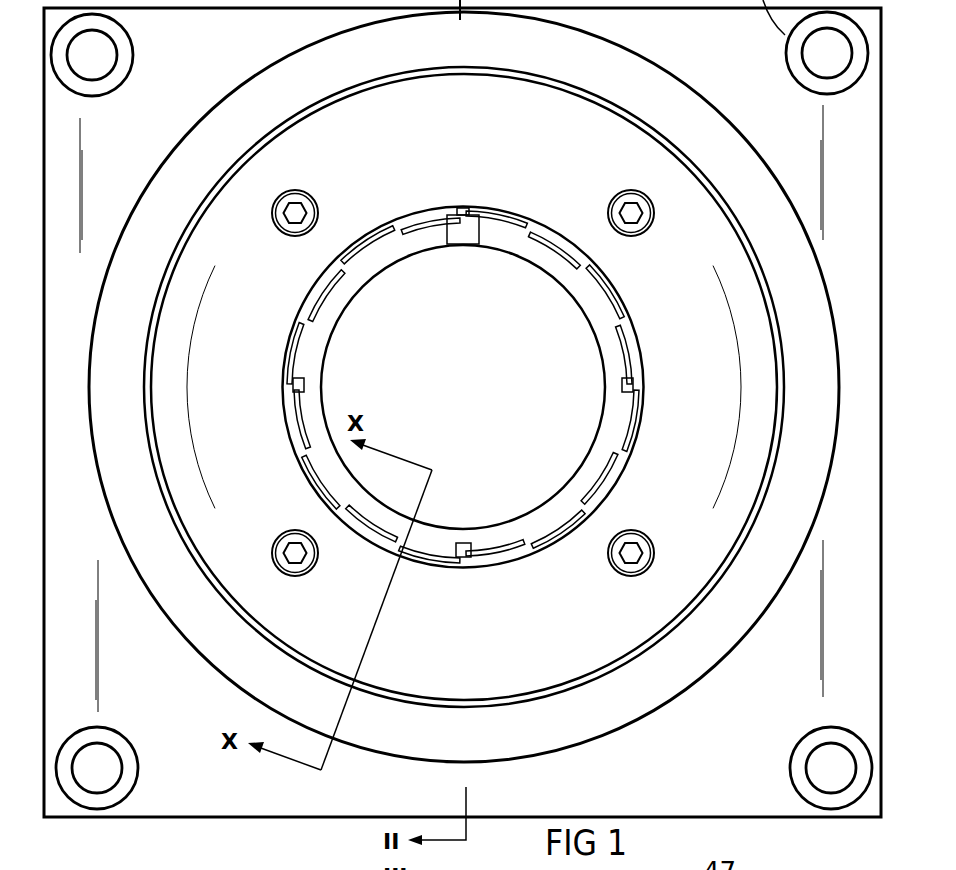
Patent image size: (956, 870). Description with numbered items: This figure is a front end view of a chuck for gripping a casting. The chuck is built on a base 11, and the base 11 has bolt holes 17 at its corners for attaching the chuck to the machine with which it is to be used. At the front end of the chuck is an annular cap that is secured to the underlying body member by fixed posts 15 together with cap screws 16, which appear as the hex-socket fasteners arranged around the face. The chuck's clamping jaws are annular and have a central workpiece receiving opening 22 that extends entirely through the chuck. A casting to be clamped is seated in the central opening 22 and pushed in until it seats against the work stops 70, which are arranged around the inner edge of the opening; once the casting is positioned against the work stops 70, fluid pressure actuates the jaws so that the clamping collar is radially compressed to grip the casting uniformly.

The base 11 is at (160, 825).
The fixed posts 15 is at (700, 606).
The cap screws 16 is at (288, 190).
The bolt holes 17 is at (800, 740).
The central workpiece receiving opening 22 is at (523, 288).
The work stops 70 is at (456, 247).